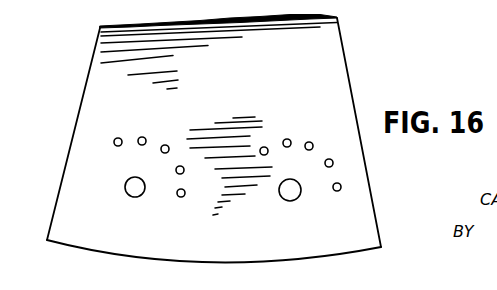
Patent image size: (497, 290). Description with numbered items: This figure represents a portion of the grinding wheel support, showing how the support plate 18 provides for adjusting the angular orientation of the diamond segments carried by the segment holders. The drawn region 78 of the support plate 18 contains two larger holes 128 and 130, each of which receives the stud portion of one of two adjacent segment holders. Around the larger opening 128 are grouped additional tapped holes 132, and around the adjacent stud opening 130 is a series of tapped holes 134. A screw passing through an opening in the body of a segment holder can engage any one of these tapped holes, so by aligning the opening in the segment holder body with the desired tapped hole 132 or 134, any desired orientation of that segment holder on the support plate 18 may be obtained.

The sole plate 78 is at (265, 76).
The support plate 18 is at (131, 256).
The larger hole 128 is at (131, 191).
The larger hole 130 is at (299, 196).
The tapped holes 132 is at (165, 146).
The tapped holes 134 is at (308, 143).